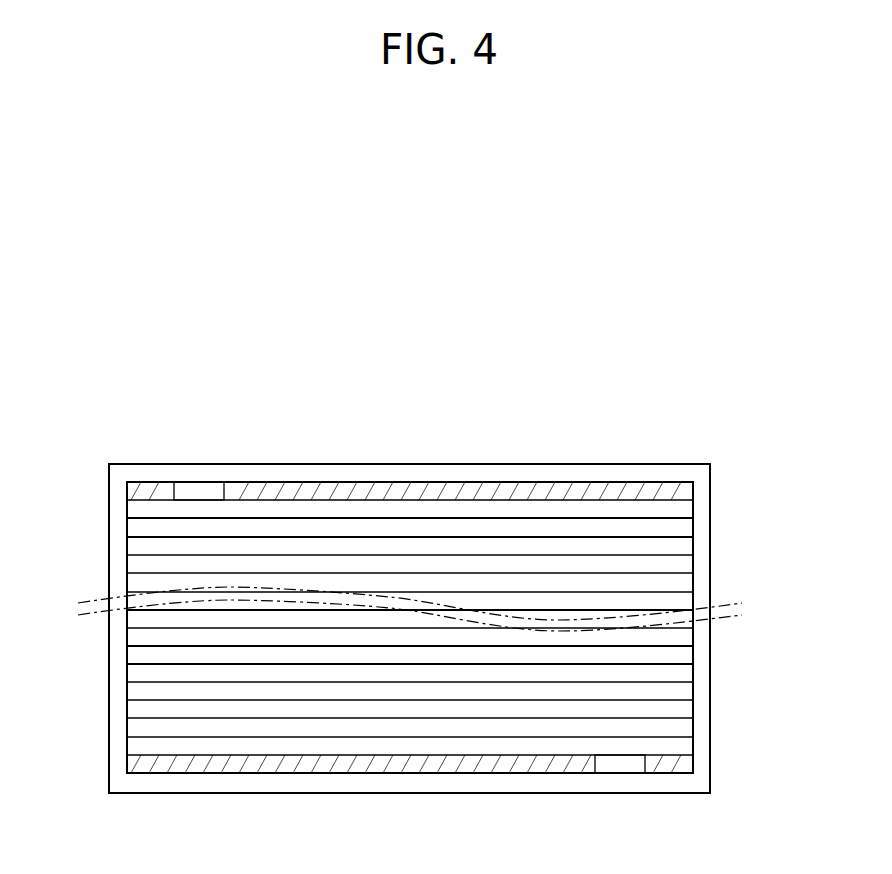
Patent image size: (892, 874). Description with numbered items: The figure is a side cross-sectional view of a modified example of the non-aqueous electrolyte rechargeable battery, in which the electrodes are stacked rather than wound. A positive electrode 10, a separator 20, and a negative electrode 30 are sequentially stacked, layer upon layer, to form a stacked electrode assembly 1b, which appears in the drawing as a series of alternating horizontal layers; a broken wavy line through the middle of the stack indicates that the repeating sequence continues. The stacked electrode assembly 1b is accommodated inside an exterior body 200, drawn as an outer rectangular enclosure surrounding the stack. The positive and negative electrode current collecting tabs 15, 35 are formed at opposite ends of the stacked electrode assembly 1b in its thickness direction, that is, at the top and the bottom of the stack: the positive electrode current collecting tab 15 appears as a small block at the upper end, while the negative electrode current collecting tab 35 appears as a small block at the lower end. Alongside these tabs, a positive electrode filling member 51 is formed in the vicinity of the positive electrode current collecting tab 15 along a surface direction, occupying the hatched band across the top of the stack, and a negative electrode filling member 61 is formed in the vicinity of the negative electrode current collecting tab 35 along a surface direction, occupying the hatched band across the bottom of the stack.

The stacked electrode assembly 1b is at (634, 416).
The exterior body 200 is at (511, 464).
The positive electrode 10 is at (680, 509).
The separator 20 is at (680, 526).
The negative electrode 30 is at (680, 546).
The positive electrode current collecting tab 15 is at (200, 490).
The negative electrode current collecting tab 35 is at (620, 764).
The positive electrode filling member 51 is at (422, 490).
The negative electrode filling member 61 is at (362, 764).